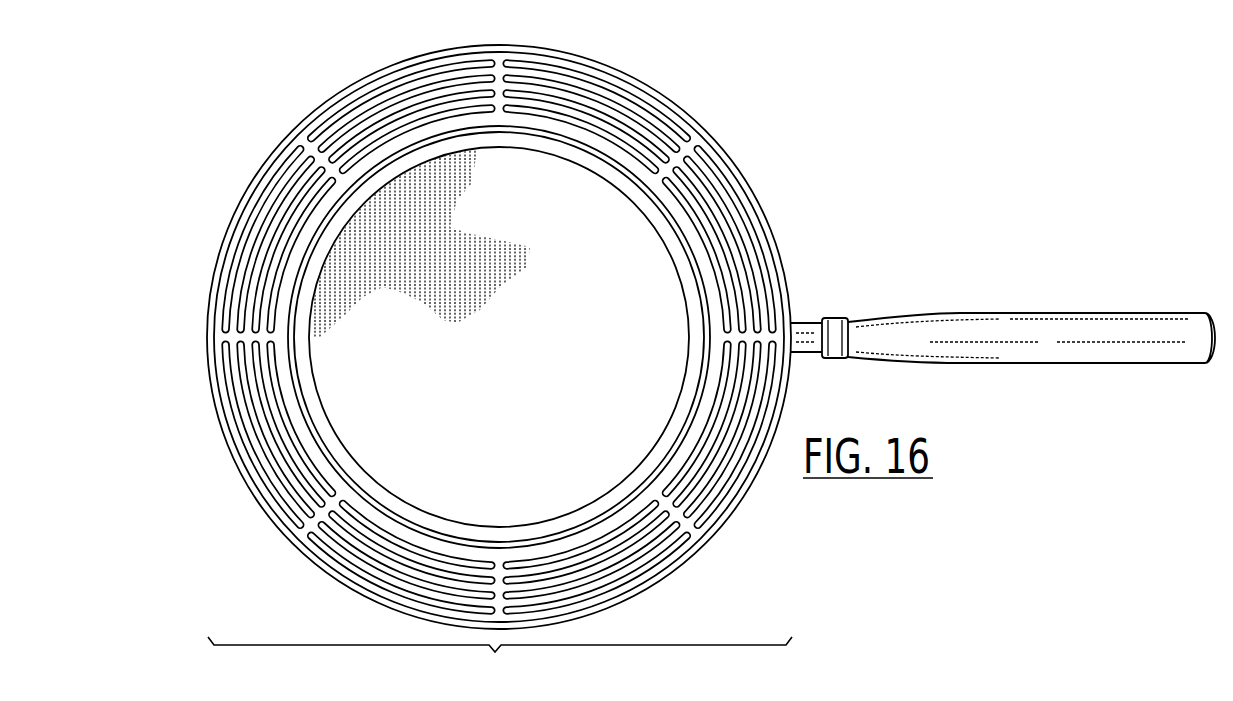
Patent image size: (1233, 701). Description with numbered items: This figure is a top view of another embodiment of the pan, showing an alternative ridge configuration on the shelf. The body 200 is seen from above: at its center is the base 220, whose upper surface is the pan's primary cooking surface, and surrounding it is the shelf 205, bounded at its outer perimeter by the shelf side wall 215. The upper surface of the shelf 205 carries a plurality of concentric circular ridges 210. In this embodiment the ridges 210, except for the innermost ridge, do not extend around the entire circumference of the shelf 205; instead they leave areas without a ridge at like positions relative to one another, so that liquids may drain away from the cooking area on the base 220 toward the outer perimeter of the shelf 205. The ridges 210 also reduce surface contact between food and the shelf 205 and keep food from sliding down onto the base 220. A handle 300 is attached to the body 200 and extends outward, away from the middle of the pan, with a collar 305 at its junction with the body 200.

The body 200 is at (500, 661).
The shelf 205 is at (236, 231).
The ridges 210 is at (372, 132).
The shelf side wall 215 is at (750, 181).
The base 220 is at (525, 358).
The handle 300 is at (1030, 330).
The collar 305 is at (800, 327).